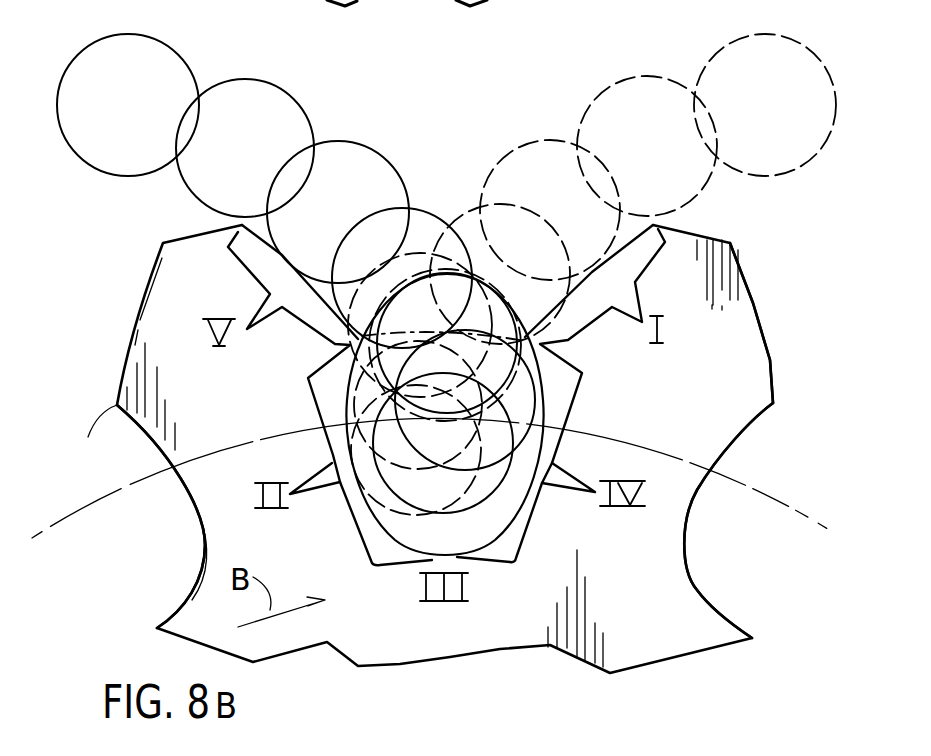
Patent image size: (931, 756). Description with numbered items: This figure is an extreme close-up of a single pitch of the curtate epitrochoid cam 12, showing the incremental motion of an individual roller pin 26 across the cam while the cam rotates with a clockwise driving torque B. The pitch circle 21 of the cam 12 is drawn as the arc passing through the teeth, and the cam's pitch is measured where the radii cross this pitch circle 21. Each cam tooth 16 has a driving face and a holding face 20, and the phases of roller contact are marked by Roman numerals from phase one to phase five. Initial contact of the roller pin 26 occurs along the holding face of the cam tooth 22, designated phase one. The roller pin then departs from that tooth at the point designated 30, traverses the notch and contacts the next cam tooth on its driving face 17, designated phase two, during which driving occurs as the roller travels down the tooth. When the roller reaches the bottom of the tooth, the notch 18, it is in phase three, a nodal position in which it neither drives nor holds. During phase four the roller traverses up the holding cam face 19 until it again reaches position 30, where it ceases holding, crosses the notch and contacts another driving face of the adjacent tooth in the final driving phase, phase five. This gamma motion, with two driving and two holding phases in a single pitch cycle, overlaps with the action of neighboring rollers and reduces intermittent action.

The curtate epitrochoid cam 12 is at (623, 555).
The cam tooth 16 is at (700, 298).
The driving face 17 is at (732, 448).
The notch 18 is at (438, 556).
The holding cam face 19 is at (186, 512).
The holding face of the cam tooth 20 is at (762, 323).
The pitch circle of the cam 21 is at (808, 513).
The holding face of the cam tooth 22 is at (135, 313).
The roller pin 26 is at (187, 62).
The departure point 30 is at (88, 442).